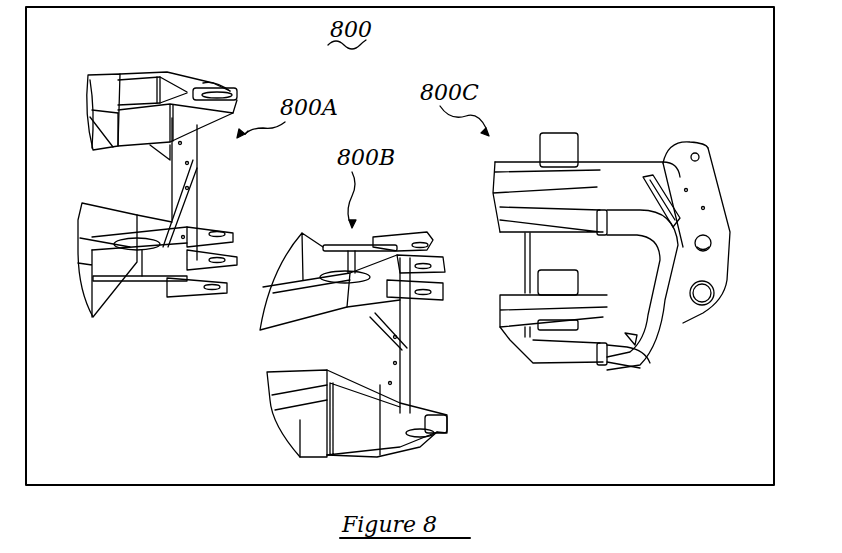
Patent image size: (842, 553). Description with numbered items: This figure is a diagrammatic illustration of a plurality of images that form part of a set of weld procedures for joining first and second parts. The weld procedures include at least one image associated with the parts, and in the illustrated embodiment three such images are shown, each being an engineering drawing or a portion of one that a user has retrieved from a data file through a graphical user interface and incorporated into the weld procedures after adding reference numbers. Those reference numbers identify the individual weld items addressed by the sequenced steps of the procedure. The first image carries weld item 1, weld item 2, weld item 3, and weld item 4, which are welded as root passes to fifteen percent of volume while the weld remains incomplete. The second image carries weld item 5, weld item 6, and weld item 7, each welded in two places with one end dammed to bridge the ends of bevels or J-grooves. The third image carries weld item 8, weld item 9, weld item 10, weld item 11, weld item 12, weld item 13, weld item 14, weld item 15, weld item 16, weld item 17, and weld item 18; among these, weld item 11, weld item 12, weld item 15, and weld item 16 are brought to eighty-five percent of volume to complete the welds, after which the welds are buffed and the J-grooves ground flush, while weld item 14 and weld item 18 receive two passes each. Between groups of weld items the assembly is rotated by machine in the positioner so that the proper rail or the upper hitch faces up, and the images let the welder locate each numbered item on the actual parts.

The weld item 1 is at (600, 162).
The weld item 2 is at (597, 220).
The weld item 3 is at (707, 240).
The weld item 4 is at (602, 347).
The weld item 5 is at (365, 312).
The weld item 6 is at (327, 417).
The weld item 7 is at (327, 417).
The weld item 8 is at (167, 245).
The weld item 9 is at (105, 128).
The weld item 10 is at (117, 110).
The weld item 11 is at (599, 113).
The weld item 12 is at (491, 272).
The weld item 13 is at (622, 220).
The weld item 14 is at (687, 183).
The weld item 15 is at (714, 247).
The weld item 16 is at (602, 357).
The weld item 17 is at (620, 357).
The weld item 18 is at (632, 337).